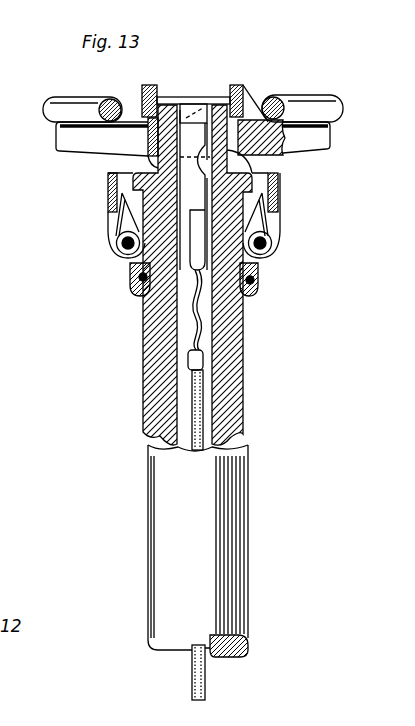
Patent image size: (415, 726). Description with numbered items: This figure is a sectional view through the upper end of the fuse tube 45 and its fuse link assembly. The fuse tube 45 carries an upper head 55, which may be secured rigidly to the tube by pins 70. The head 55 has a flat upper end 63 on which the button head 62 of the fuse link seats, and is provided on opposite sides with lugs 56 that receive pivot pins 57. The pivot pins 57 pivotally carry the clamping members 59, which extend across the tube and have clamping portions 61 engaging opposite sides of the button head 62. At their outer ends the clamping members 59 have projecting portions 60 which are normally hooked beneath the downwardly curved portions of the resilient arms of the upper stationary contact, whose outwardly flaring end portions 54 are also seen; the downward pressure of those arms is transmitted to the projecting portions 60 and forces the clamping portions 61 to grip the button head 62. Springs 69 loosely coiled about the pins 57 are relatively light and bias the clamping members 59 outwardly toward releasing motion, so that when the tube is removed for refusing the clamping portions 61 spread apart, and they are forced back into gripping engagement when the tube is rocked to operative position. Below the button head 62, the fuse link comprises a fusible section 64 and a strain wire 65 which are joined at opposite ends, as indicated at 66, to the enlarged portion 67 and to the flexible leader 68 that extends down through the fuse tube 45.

The fuse tube 45 is at (256, 473).
The outwardly flaring end portions 54 is at (75, 97).
The upper head 55 is at (240, 182).
The lugs 56 is at (116, 244).
The pivot pins 57 is at (124, 258).
The clamping members 59 is at (106, 210).
The projecting portions 60 is at (58, 144).
The clamping portions 61 is at (150, 85).
The button head 62 is at (168, 100).
The flat upper end 63 is at (209, 106).
The fusible section 64 is at (152, 343).
The strain wire 65 is at (200, 337).
The joints 66 is at (200, 359).
The enlarged portion 67 is at (132, 270).
The flexible leader 68 is at (211, 390).
The springs 69 is at (118, 224).
The pins 70 is at (132, 290).